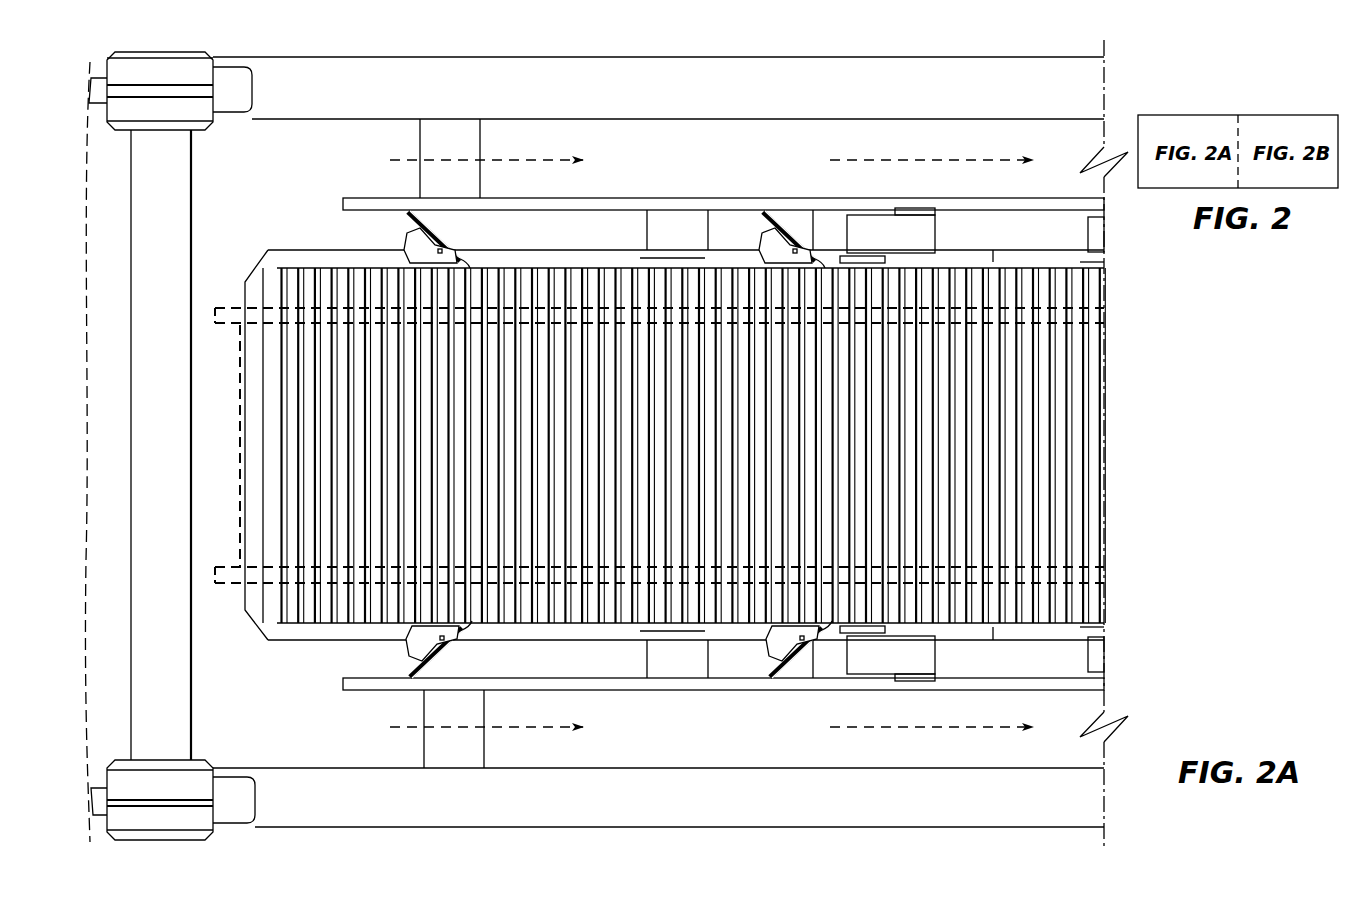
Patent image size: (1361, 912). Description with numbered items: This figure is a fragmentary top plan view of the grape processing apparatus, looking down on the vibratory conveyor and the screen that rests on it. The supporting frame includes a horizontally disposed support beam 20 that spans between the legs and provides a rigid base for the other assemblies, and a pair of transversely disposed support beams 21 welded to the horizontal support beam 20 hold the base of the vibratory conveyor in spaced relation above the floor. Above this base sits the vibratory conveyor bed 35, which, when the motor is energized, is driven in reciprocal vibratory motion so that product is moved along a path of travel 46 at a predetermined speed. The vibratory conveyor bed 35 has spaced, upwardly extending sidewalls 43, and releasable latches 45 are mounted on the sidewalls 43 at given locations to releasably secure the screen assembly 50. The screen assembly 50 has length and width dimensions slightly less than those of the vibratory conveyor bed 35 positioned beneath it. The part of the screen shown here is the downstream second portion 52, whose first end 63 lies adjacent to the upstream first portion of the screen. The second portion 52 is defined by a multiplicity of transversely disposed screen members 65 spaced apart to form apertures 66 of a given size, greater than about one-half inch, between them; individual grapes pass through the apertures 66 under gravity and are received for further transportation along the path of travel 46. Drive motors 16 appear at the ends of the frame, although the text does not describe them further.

The drive motor 16 is at (158, 108).
The horizontal support beam 20 is at (690, 99).
The transverse support beam 21 is at (440, 143).
The vibratory conveyor bed 35 is at (263, 248).
The sidewall 43 is at (265, 636).
The releasable latch 45 is at (413, 255).
The path of travel 46 is at (508, 158).
The screen assembly 50 is at (1102, 333).
The second portion 52 is at (1068, 442).
The first end 63 is at (283, 455).
The screen member 65 is at (690, 292).
The aperture 66 is at (696, 600).